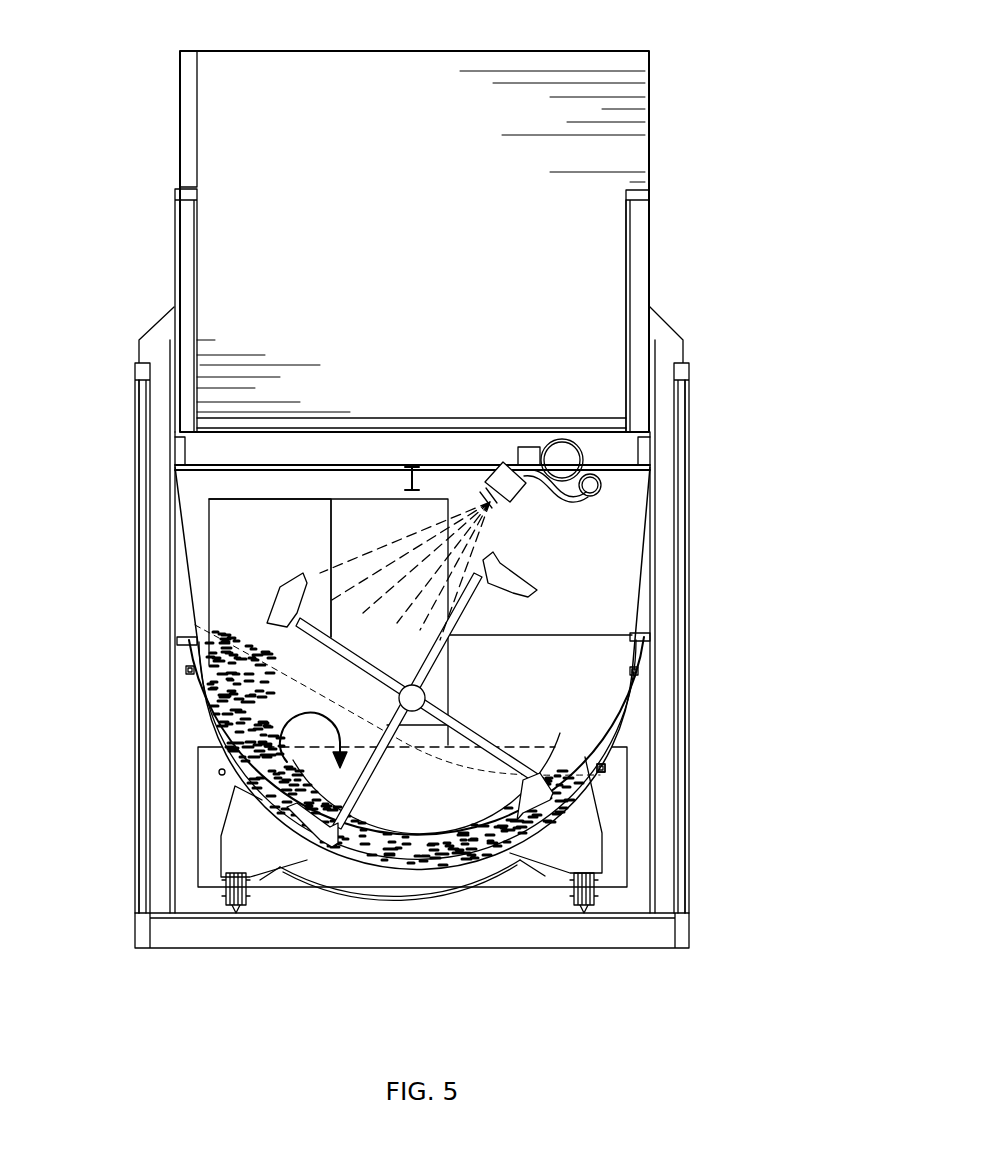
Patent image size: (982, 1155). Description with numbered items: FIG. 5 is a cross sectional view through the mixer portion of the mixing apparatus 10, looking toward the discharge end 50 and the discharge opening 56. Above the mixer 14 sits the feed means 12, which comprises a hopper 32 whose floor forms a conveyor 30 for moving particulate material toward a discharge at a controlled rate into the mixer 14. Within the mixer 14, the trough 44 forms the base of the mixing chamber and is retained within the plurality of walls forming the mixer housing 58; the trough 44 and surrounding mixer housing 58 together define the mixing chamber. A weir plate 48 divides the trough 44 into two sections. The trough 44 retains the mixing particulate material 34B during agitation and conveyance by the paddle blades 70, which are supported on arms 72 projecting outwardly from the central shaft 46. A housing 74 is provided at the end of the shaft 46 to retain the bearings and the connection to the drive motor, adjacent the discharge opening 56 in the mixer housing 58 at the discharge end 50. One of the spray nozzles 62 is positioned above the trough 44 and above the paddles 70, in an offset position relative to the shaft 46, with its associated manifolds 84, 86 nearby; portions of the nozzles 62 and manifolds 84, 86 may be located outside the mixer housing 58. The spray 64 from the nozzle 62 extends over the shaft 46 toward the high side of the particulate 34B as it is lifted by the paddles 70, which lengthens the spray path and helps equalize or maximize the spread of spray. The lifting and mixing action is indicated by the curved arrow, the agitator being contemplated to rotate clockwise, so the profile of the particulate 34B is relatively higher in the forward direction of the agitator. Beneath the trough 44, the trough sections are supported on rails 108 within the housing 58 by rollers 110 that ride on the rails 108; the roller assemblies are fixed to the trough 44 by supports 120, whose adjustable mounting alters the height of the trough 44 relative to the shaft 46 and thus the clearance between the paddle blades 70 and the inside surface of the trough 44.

The mixing apparatus 10 is at (88, 90).
The feed means 12 is at (660, 97).
The mixer 14 is at (704, 452).
The conveyor 30 is at (550, 417).
The hopper 32 is at (573, 257).
The mixing particulate material 34B is at (195, 690).
The trough 44 is at (617, 735).
The shaft 46 is at (425, 697).
The weir plate 48 is at (603, 768).
The discharge end 50 is at (605, 523).
The discharge opening 56 is at (238, 539).
The mixer housing 58 is at (683, 553).
The spray nozzle 62 is at (500, 470).
The spray 64 is at (488, 560).
The paddle blades 70 is at (282, 608).
The arms 72 is at (195, 657).
The housing 74 is at (331, 530).
The manifold 84 is at (590, 474).
The manifold 86 is at (555, 458).
The rails 108 is at (243, 890).
The rollers 110 is at (255, 893).
The support 120 is at (238, 850).